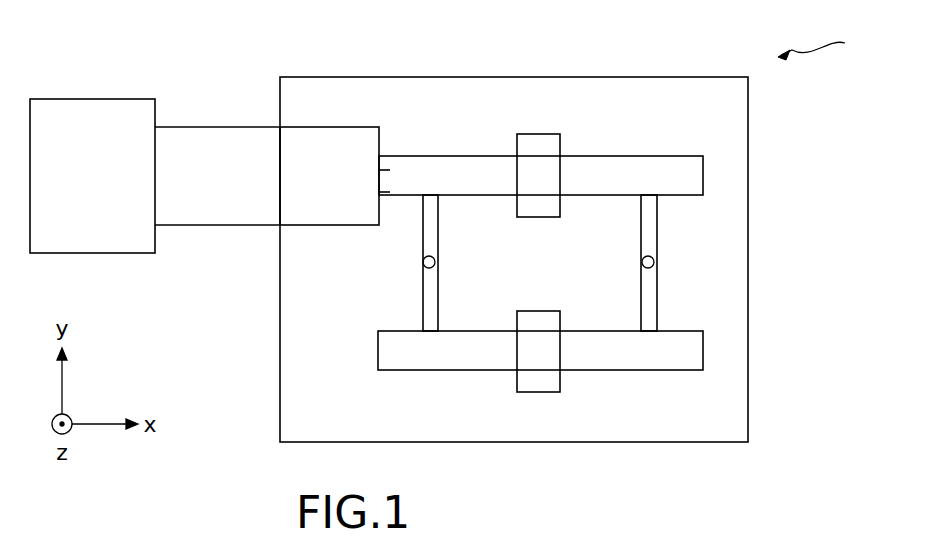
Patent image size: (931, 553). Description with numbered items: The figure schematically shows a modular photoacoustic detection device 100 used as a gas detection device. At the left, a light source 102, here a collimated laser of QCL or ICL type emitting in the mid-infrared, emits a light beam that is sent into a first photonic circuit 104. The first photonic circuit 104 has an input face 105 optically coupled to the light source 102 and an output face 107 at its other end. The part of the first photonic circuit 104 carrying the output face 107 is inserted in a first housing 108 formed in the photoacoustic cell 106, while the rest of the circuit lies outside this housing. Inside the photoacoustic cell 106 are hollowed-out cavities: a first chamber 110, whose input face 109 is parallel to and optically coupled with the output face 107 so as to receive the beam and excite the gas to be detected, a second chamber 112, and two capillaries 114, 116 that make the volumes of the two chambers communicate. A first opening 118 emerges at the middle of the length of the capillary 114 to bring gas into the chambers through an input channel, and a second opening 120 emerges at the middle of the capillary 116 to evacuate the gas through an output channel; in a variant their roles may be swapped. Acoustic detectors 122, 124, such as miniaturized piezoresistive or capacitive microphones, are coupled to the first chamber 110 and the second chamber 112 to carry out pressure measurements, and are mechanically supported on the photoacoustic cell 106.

The modular photoacoustic detection device 100 is at (835, 43).
The light source 102 is at (55, 145).
The first photonic circuit 104 is at (238, 209).
The input face 105 is at (155, 156).
The photoacoustic cell 106 is at (643, 85).
The output face 107 is at (379, 192).
The first housing 108 is at (317, 145).
The input face 109 is at (379, 170).
The first chamber 110 is at (680, 175).
The second chamber 112 is at (680, 352).
The capillary 114 is at (427, 305).
The capillary 116 is at (648, 305).
The first opening 118 is at (435, 262).
The second opening 120 is at (654, 262).
The acoustic detector 122 is at (531, 145).
The acoustic detector 124 is at (538, 382).